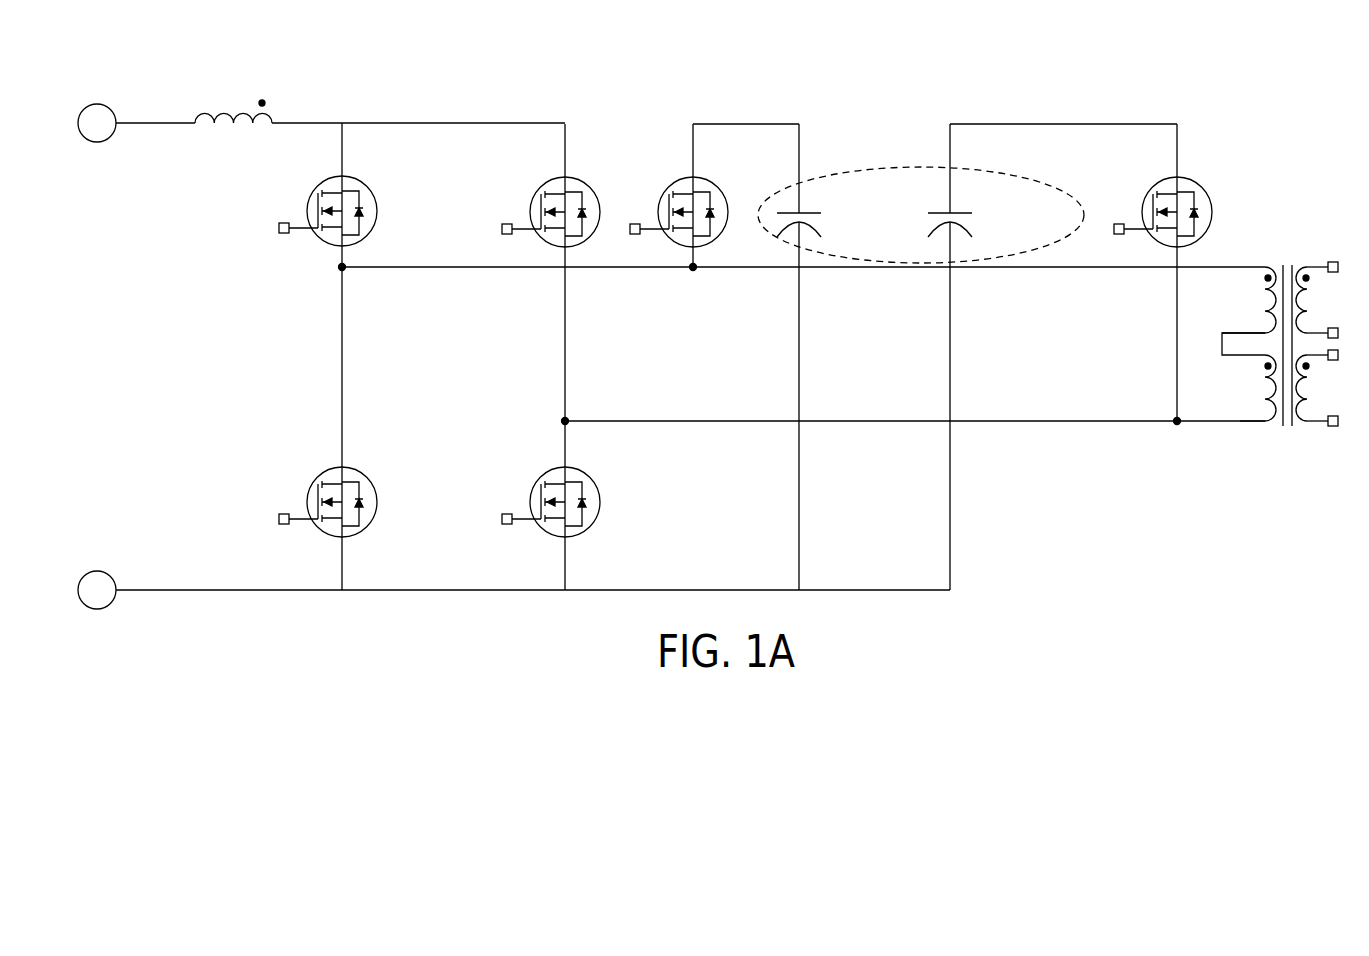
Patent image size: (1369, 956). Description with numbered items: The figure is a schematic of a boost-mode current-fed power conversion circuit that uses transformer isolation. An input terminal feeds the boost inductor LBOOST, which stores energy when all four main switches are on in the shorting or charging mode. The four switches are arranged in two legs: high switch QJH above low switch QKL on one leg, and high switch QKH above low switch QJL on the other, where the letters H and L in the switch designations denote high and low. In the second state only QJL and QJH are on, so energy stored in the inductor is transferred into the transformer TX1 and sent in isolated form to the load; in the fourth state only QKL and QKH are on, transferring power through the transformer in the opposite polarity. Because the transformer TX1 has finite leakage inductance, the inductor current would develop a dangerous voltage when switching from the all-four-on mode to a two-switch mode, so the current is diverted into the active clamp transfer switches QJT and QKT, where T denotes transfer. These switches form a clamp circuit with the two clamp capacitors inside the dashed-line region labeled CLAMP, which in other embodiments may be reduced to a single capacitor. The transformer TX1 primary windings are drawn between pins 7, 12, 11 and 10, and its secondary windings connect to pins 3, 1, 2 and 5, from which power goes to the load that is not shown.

The boost inductor LBOOST is at (233, 99).
The high switch QJH is at (342, 196).
The high switch QKH is at (570, 197).
The transfer switch QJT is at (692, 197).
The transfer switch QKT is at (1179, 199).
The low switch QKL is at (342, 488).
The low switch QJL is at (569, 489).
The clamp portion CLAMP is at (912, 168).
The transformer TX1 is at (1264, 331).
The transformer primary pin 7 is at (1255, 260).
The transformer primary pin 12 is at (1243, 320).
The transformer primary pin 11 is at (1251, 374).
The transformer primary pin 10 is at (1247, 408).
The transformer secondary pin 3 is at (1322, 259).
The transformer secondary pin 1 is at (1325, 322).
The transformer secondary pin 2 is at (1322, 370).
The transformer secondary pin 5 is at (1324, 407).